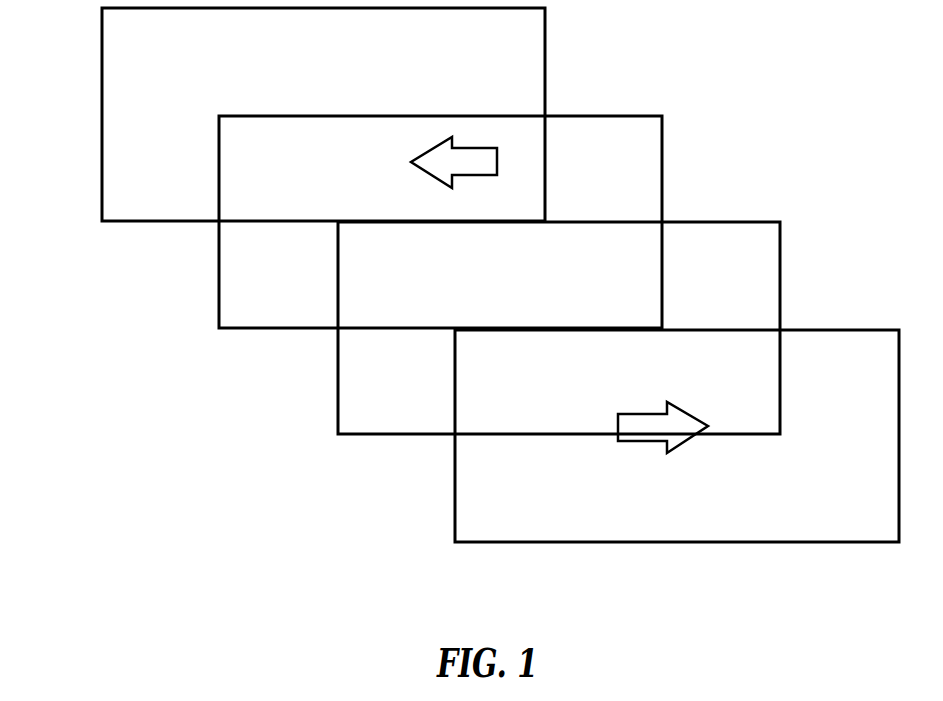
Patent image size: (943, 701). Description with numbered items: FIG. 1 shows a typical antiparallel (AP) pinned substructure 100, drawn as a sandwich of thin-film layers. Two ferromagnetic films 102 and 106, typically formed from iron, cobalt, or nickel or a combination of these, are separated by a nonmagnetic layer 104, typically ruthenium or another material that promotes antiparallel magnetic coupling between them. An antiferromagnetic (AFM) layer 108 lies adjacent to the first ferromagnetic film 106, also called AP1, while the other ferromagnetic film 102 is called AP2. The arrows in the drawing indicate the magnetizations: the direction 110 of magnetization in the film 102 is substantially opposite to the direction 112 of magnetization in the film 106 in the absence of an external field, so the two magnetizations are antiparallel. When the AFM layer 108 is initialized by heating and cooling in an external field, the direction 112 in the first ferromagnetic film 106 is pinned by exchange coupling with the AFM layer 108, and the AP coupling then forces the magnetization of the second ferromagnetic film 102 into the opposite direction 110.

The image sequence / motion picture 100 is at (237, 558).
The second ferromagnetic film 102 is at (455, 515).
The nonmagnetic layer 104 is at (338, 408).
The first ferromagnetic film 106 is at (219, 300).
The antiferromagnetic layer 108 is at (101, 195).
The direction of magnetization in film 102 110 is at (688, 440).
The direction of magnetization in film 106 112 is at (497, 164).